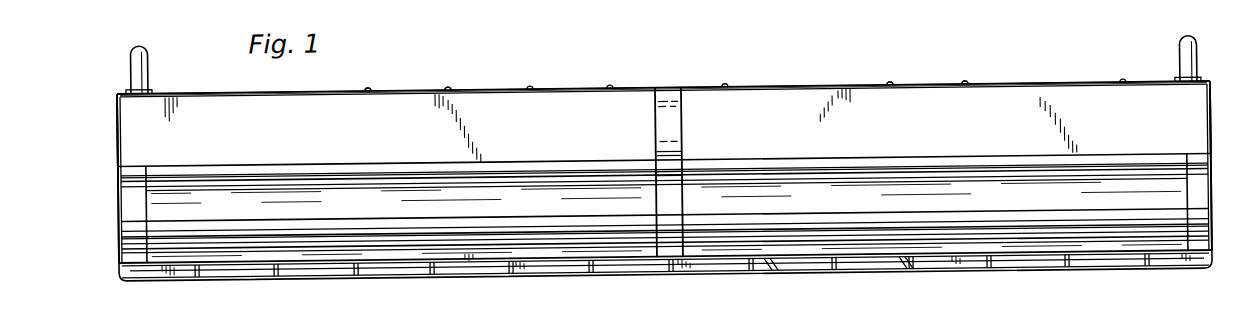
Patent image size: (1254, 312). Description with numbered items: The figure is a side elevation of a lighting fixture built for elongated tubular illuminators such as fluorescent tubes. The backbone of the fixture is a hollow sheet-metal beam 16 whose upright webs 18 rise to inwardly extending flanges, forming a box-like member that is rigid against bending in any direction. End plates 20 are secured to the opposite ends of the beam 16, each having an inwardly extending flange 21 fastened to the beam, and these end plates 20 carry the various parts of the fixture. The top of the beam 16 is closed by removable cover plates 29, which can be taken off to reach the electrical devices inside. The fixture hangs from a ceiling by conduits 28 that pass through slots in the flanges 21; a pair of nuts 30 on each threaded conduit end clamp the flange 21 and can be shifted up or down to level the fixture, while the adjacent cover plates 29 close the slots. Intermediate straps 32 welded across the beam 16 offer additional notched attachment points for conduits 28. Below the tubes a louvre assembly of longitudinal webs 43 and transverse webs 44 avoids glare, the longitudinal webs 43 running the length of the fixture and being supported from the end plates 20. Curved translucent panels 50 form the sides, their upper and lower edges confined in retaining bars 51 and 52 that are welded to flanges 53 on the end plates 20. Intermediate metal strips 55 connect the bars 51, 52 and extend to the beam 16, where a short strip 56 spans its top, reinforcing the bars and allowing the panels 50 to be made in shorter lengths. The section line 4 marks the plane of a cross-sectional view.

The section line 4- 4 is at (753, 65).
The hollow beam 16 is at (664, 125).
The upright webs 18 is at (536, 102).
The end plates 20 is at (117, 123).
The inwardly extending flange 21 is at (147, 97).
The conduits 28 is at (143, 70).
The removable cover plates 29 is at (393, 95).
The nuts 30 is at (152, 92).
The intermediate straps 32 is at (500, 98).
The longitudinal webs 43 is at (473, 269).
The transverse webs 44 is at (768, 276).
The translucent panels 50 is at (664, 207).
The upper retaining bar 51 is at (335, 168).
The lower retaining bar 52 is at (325, 258).
The flanges 53 is at (132, 208).
The intermediate metal strips 55 is at (679, 217).
The short strip 56 is at (670, 94).